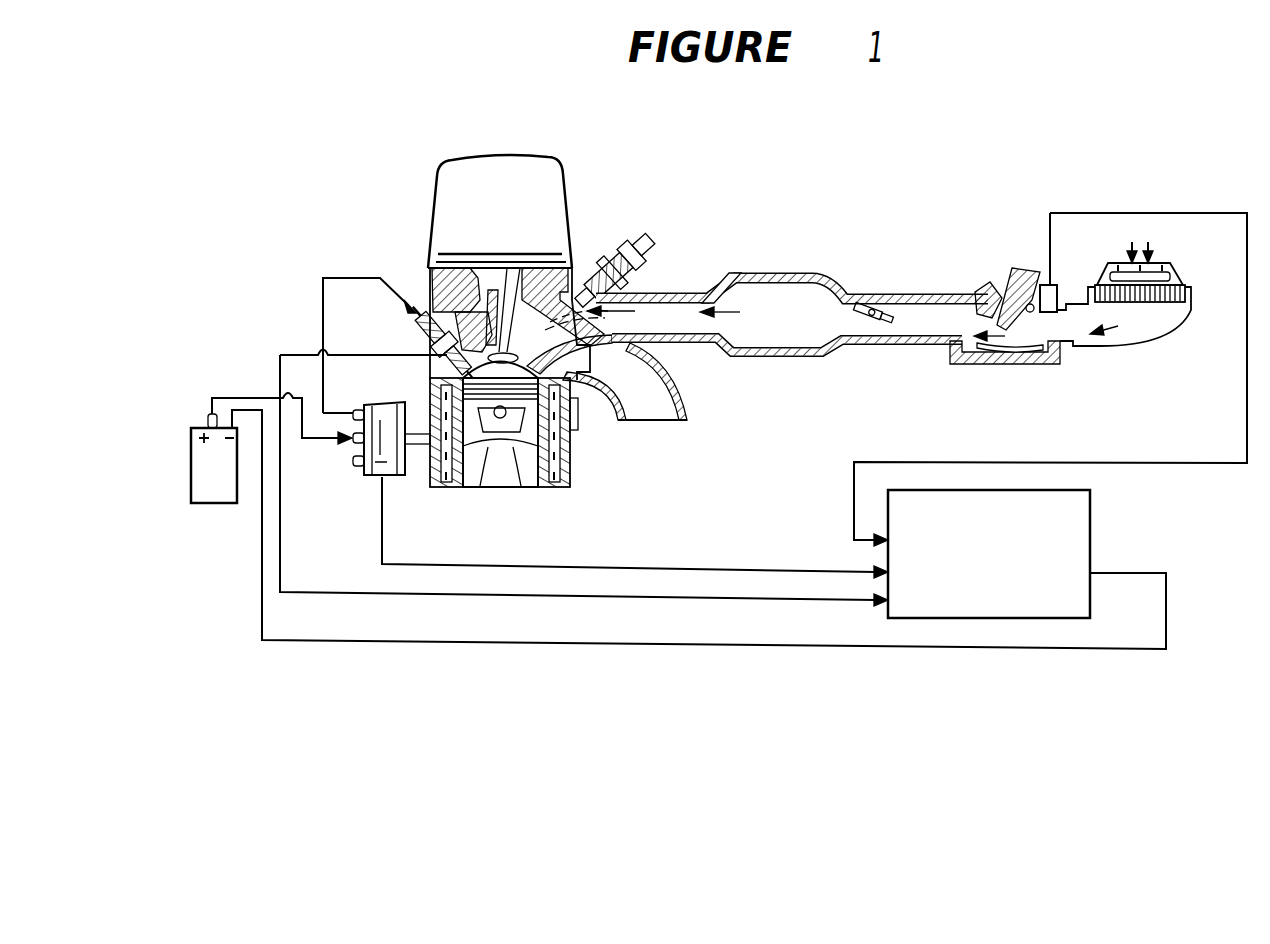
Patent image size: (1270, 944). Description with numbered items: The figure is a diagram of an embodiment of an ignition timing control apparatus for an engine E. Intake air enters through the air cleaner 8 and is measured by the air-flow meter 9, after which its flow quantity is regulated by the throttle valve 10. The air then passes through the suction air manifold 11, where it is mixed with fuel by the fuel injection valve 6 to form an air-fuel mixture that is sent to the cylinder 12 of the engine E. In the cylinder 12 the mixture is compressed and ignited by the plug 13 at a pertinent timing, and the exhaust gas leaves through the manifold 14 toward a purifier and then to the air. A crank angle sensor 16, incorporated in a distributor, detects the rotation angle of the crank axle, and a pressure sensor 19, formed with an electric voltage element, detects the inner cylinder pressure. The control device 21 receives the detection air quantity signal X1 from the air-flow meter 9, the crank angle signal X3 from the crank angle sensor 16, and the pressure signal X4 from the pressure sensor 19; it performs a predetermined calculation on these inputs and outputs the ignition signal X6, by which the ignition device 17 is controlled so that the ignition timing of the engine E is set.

The fuel injection valve 6 is at (620, 250).
The air cleaner 8 is at (1153, 302).
The air-flow meter 9 is at (1003, 290).
The throttle valve 10 is at (862, 305).
The suction air manifold 11 is at (796, 310).
The cylinder 12 is at (563, 393).
The plug 13 is at (430, 327).
The manifold 14 is at (637, 392).
The crank angle sensor 16 is at (386, 476).
The ignition device 17 is at (191, 483).
The pressure sensor 19 is at (442, 363).
The control device 21 is at (1090, 540).
The engine E is at (572, 425).
The detection air quantity signal X1 is at (854, 485).
The crank angle signal X3 is at (638, 568).
The pressure signal X4 is at (578, 597).
The ignition signal X6 is at (1166, 620).